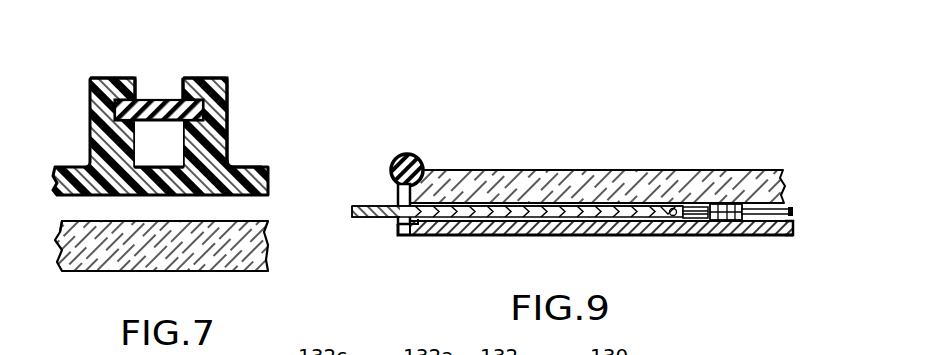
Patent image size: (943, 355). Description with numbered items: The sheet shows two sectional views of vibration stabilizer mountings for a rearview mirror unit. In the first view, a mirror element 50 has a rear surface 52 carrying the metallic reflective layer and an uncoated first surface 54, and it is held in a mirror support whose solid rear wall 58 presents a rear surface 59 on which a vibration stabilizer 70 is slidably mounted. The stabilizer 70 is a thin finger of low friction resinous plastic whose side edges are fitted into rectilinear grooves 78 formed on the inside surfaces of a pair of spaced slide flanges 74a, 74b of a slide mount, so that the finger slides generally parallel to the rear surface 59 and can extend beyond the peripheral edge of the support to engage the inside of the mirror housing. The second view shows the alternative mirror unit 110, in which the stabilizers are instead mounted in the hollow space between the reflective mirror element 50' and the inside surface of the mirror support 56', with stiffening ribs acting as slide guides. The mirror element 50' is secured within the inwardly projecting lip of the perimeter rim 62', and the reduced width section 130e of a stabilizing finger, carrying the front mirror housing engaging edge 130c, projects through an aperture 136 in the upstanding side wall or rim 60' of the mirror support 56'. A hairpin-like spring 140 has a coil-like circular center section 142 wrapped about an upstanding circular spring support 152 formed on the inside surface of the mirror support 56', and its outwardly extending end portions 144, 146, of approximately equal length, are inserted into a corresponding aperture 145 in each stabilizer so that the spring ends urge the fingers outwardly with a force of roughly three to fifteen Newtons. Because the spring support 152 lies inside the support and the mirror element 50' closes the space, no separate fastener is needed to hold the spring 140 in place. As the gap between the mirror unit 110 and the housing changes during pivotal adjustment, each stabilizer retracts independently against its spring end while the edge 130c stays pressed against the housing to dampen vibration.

In FIG. 7, the mirror element 50 is at (161, 276).
In FIG. 7, the rear surface of the mirror element 52 is at (85, 215).
In FIG. 7, the first surface of the mirror element 54 is at (195, 258).
In FIG. 7, the rear wall 58 is at (70, 165).
In FIG. 7, the rear surface of the rear wall 59 is at (243, 165).
In FIG. 7, the vibration stabilizer 70 is at (158, 92).
In FIG. 7, the slide flange 74a is at (112, 78).
In FIG. 7, the slide flange 74b is at (212, 78).
In FIG. 7, the rectilinear groove 78 is at (198, 112).
In FIG. 9, the reflective mirror element 50' is at (597, 160).
In FIG. 9, the mirror support 56' is at (595, 265).
In FIG. 9, the upstanding side wall or rim 60' is at (369, 152).
In FIG. 9, the perimeter rim 62' is at (407, 126).
In FIG. 9, the mirror unit 110 is at (720, 76).
In FIG. 9, the front mirror housing engaging edge 130c is at (357, 220).
In FIG. 9, the reduced width section 130e is at (370, 206).
In FIG. 9, the aperture 136 is at (395, 224).
In FIG. 9, the hairpin-like spring 140 is at (792, 208).
In FIG. 9, the coil-like circular center section 142 is at (735, 235).
In FIG. 9, the spring end portion 144 is at (696, 207).
In FIG. 9, the aperture in stabilizer 145 is at (672, 208).
In FIG. 9, the spring end portion 146 is at (776, 235).
In FIG. 9, the spring support 152 is at (727, 204).